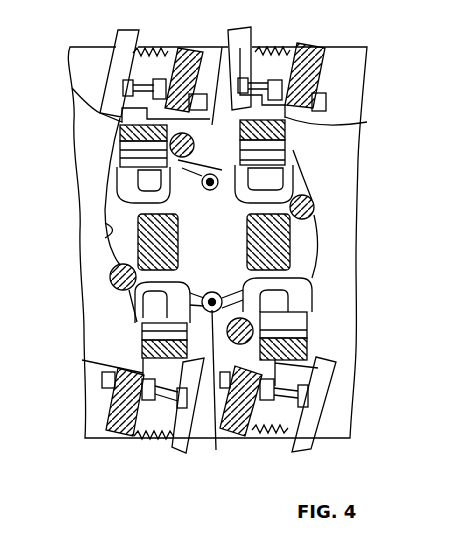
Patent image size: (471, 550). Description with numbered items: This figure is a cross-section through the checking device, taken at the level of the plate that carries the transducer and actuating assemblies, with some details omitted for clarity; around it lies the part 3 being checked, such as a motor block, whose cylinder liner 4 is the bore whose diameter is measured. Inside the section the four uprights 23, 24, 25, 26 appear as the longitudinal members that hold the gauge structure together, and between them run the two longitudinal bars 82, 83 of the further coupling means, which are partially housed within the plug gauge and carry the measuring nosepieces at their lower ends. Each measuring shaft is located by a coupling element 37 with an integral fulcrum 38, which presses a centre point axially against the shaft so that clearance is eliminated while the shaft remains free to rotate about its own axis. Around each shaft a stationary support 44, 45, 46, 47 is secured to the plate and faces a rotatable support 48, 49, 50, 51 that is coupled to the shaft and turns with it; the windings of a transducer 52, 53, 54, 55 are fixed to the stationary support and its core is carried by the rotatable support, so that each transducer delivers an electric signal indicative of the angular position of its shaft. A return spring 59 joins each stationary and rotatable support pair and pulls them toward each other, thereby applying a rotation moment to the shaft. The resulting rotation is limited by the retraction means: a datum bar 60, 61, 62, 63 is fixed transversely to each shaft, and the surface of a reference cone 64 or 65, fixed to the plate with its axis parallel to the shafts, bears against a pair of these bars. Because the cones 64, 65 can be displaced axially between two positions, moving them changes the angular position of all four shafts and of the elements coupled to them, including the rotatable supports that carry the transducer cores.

The part 3 is at (350, 60).
The cylinder liner 4 is at (105, 226).
The upright 23 is at (330, 317).
The upright 24 is at (115, 272).
The upright 25 is at (120, 150).
The upright 26 is at (320, 222).
The coupling element 37 is at (270, 170).
The integral fulcrum 38 is at (275, 152).
The stationary support 44 is at (262, 445).
The stationary support 45 is at (108, 438).
The stationary support 46 is at (192, 47).
The stationary support 47 is at (322, 50).
The rotatable support 48 is at (312, 460).
The rotatable support 49 is at (178, 456).
The rotatable support 50 is at (115, 38).
The rotatable support 51 is at (245, 50).
The transducer 52 is at (352, 440).
The transducer 53 is at (82, 360).
The transducer 54 is at (102, 114).
The transducer 55 is at (362, 122).
The return spring 59 is at (148, 52).
The datum bar 60 is at (350, 288).
The datum bar 61 is at (145, 296).
The datum bar 62 is at (117, 200).
The datum bar 63 is at (317, 197).
The reference cone 64 is at (216, 448).
The reference cone 65 is at (222, 47).
The longitudinal bar 82 is at (290, 250).
The longitudinal bar 83 is at (137, 241).